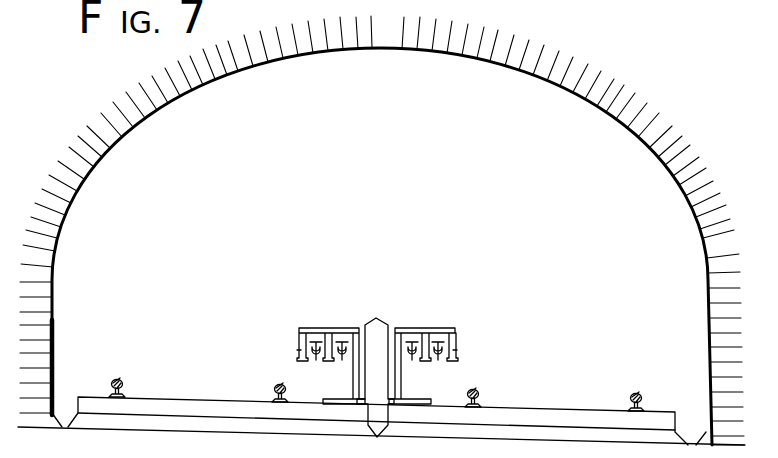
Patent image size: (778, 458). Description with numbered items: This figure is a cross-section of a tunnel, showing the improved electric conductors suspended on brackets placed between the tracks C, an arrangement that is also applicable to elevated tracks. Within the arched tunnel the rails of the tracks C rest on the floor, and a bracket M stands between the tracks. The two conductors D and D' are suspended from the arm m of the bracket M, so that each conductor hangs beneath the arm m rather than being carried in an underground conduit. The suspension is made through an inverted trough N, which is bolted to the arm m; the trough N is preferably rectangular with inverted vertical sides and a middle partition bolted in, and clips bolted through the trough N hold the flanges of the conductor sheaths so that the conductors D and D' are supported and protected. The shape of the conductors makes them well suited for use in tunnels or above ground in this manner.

The tracks C is at (124, 383).
The bracket M is at (385, 326).
The arm m is at (316, 329).
The inverted trough N is at (299, 348).
The conductor D is at (371, 366).
The conductor D' is at (393, 366).